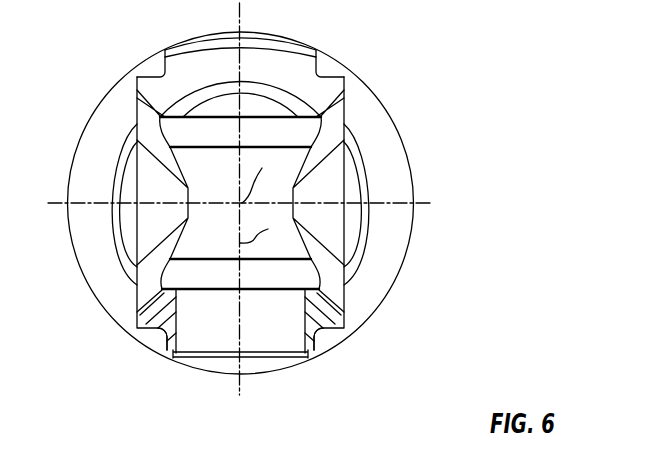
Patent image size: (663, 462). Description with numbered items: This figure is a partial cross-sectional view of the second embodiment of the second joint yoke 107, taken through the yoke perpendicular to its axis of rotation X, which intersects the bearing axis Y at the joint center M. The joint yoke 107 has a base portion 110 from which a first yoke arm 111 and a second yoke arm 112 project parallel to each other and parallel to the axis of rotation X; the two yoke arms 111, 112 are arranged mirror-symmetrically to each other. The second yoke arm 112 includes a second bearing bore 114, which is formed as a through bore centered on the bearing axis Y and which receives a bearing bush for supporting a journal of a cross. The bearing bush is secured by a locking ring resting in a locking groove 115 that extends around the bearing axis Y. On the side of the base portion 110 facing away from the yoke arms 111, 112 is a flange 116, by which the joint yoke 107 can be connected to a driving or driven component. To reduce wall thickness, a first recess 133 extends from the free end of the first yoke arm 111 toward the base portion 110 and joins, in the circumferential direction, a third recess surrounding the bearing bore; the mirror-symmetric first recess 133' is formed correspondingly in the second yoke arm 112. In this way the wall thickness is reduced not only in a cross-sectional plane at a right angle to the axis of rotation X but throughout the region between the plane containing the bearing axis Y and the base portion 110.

The second joint yoke 107 is at (478, 146).
The base portion 110 is at (362, 237).
The first yoke arm 111 is at (270, 55).
The second yoke arm 112 is at (343, 303).
The second bearing bore 114 is at (182, 305).
The locking groove 115 is at (188, 352).
The flange 116 is at (395, 175).
The first recess 133 is at (272, 54).
The first recess of second yoke arm 133' is at (280, 349).